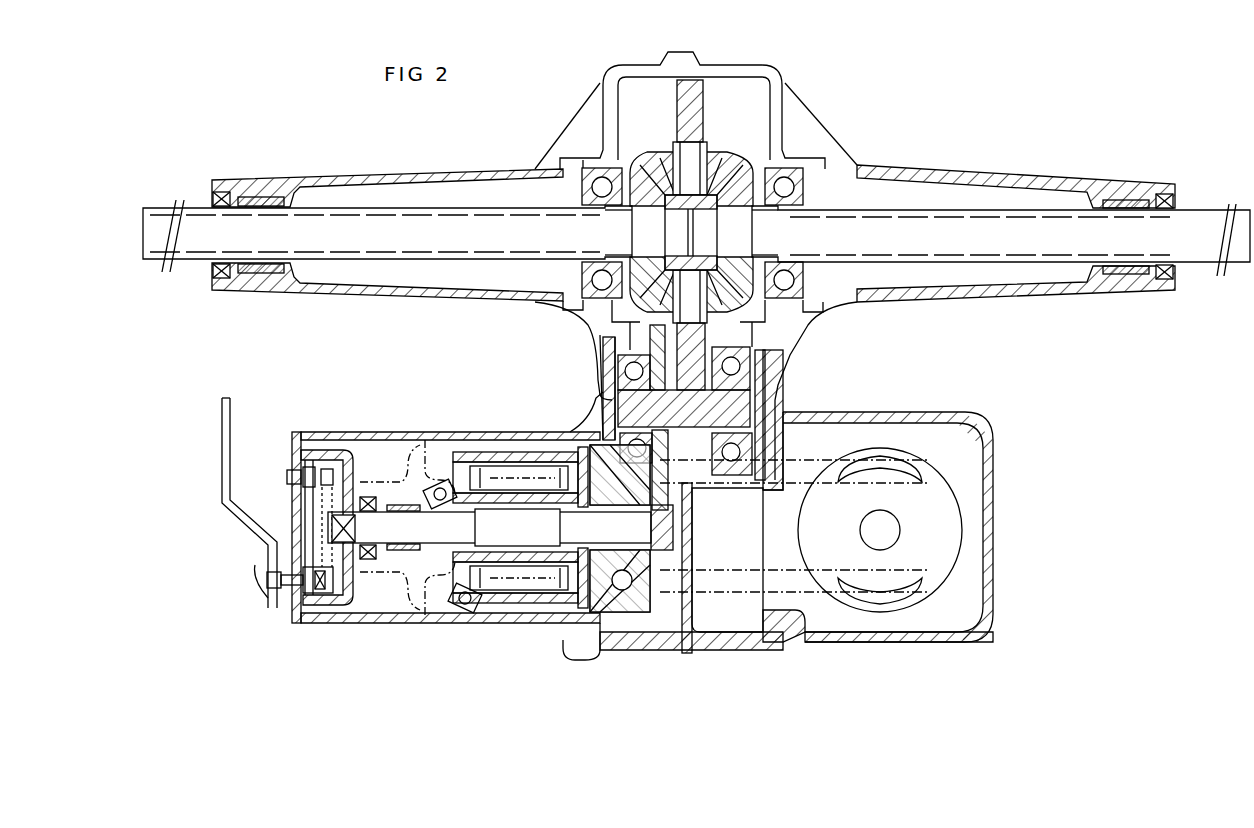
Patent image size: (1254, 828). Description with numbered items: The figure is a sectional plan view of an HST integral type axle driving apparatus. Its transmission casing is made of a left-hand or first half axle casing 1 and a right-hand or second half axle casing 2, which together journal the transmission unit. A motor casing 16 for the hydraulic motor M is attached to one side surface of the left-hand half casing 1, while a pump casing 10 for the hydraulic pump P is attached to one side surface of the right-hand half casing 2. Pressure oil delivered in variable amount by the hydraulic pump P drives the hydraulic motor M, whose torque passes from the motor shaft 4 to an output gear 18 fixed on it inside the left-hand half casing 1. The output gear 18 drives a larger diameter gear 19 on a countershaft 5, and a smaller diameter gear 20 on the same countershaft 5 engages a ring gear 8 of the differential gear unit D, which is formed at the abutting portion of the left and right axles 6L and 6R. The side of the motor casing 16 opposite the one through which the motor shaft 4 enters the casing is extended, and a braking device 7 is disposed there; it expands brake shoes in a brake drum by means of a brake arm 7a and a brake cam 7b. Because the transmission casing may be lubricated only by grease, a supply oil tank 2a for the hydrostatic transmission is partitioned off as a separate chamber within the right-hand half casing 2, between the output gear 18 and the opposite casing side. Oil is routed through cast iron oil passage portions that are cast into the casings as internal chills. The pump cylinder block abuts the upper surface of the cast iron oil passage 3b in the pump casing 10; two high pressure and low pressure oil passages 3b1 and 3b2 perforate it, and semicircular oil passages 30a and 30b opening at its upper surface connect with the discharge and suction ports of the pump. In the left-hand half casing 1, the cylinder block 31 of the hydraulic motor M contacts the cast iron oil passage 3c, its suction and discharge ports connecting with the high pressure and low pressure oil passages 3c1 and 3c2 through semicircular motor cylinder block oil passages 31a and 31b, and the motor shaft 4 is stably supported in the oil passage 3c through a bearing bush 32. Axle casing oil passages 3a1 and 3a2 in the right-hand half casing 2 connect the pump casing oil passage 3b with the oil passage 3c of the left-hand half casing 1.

The left-hand half axle casing 1 is at (603, 83).
The right-hand half axle casing 2 is at (784, 82).
The supply oil tank 2a is at (793, 546).
The axle casing oil passage 3a1 is at (743, 633).
The axle casing oil passage 3a2 is at (760, 433).
The cast iron oil passage 3b is at (913, 598).
The high pressure and low pressure oil passage 3b1 is at (803, 645).
The high pressure and low pressure oil passage 3b2 is at (812, 473).
The cast iron oil passage 3c is at (612, 622).
The high pressure and low pressure oil passage 3c1 is at (648, 632).
The high pressure and low pressure oil passage 3c2 is at (600, 450).
The motor shaft 4 is at (500, 528).
The countershaft 5 is at (684, 392).
The left axle 6L is at (387, 236).
The right axle 6R is at (1001, 240).
The braking device 7 is at (326, 462).
The brake arm 7a is at (221, 451).
The brake cam 7b is at (268, 582).
The ring gear 8 is at (677, 118).
The pump casing 10 is at (905, 412).
The motor casing 16 is at (410, 607).
The output gear 18 is at (662, 568).
The larger diameter gear 19 is at (686, 470).
The smaller diameter gear 20 is at (709, 568).
The semicircular oil passage 30a is at (915, 580).
The semicircular oil passage 30b is at (908, 476).
The cylinder block 31 is at (522, 628).
The motor cylinder block oil passage 31a is at (573, 620).
The motor cylinder block oil passage 31b is at (570, 430).
The bearing bush 32 is at (563, 638).
The differential gear unit D is at (736, 143).
The hydraulic motor M is at (430, 426).
The hydraulic pump P is at (890, 648).